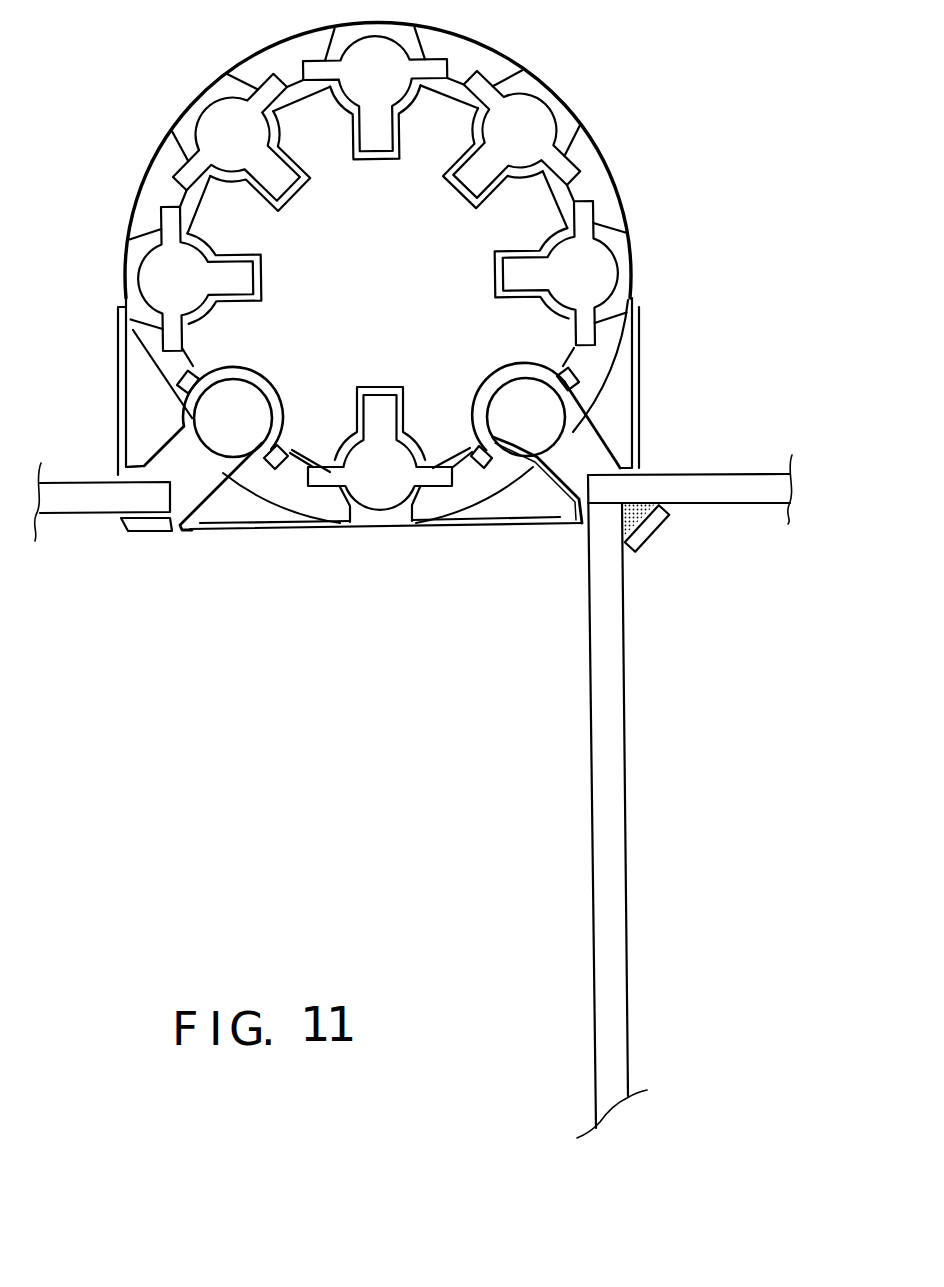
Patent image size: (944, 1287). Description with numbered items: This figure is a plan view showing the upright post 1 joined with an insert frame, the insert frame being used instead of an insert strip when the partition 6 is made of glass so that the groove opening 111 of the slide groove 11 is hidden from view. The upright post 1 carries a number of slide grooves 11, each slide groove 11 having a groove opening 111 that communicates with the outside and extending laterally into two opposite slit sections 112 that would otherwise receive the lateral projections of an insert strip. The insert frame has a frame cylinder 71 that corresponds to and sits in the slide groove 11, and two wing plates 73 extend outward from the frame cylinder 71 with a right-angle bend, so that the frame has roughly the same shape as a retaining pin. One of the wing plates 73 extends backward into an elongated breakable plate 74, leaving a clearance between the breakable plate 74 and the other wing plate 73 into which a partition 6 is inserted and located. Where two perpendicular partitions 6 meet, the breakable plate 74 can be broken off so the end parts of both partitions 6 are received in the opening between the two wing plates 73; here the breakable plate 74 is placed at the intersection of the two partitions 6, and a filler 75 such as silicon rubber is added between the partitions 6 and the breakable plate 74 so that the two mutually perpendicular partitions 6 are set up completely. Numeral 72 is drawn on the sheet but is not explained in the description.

The upright post 1 is at (600, 176).
The partition 6 is at (73, 502).
The slide groove 11 is at (298, 440).
The groove opening 111 is at (180, 416).
The slit section 112 is at (187, 376).
The frame cylinder 71 is at (272, 452).
The connecting arm 72 is at (185, 529).
The wing plate 73 is at (207, 529).
The breakable plate 74 is at (148, 520).
The filler 75 is at (643, 503).